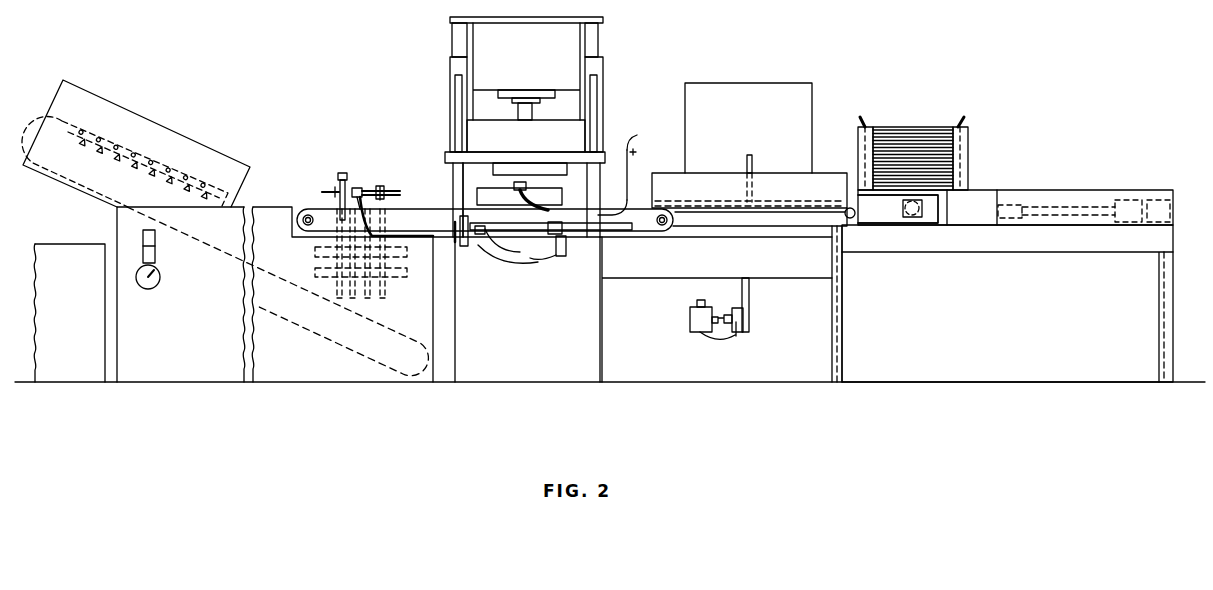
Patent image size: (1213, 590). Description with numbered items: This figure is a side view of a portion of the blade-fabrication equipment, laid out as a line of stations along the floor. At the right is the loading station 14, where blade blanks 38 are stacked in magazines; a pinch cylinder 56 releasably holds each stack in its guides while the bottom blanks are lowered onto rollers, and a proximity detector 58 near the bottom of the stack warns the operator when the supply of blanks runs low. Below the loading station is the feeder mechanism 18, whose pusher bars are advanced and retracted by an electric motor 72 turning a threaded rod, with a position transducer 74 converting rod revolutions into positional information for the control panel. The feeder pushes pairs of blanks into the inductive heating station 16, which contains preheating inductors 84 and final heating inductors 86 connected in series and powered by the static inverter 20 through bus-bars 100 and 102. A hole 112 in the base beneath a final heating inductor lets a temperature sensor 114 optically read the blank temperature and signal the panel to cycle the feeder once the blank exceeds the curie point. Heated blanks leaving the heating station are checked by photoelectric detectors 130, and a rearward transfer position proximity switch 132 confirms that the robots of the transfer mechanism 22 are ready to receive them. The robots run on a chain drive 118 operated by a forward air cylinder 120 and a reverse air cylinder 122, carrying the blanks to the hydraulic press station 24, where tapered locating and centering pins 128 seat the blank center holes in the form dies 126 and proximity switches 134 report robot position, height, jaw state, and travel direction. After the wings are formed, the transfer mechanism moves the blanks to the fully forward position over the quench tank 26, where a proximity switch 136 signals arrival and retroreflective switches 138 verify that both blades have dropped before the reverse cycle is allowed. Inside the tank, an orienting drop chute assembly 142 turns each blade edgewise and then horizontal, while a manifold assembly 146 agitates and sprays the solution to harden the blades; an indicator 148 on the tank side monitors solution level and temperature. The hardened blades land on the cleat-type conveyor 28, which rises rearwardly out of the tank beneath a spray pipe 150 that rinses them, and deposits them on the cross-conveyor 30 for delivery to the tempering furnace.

The loading station 14 is at (967, 94).
The inductive heating station 16 is at (803, 167).
The feeder mechanism 18 is at (1022, 173).
The static inverter 20 is at (762, 69).
The transfer mechanism 22 is at (530, 297).
The hydraulic press station 24 is at (618, 59).
The quench tank 26 is at (287, 189).
The conveyor 28 is at (312, 334).
The cross-conveyor 30 is at (80, 234).
The blade blanks 38 is at (333, 190).
The pinch cylinder 56 is at (914, 218).
The proximity detector 58 is at (890, 196).
The electric motor 72 is at (1132, 200).
The position transducer 74 is at (1152, 200).
The preheating inductors 84 is at (802, 200).
The final heating inductors 86 is at (738, 200).
The bus-bar 100 is at (768, 138).
The bus-bar 102 is at (745, 158).
The hole 112 is at (697, 214).
The temperature sensor 114 is at (690, 319).
The chain drive 118 is at (656, 233).
The forward air cylinder 120 is at (512, 231).
The reverse air cylinder 122 is at (553, 250).
The form dies 126 is at (470, 200).
The locating and centering pins 128 is at (531, 177).
The photoelectric detectors 130 is at (636, 149).
The rearward transfer position proximity switch 132 is at (628, 195).
The proximity switches 134 is at (517, 187).
The proximity switch 136 is at (362, 188).
The retroreflective switches 138 is at (343, 172).
The orienting drop chute assembly 142 is at (313, 272).
The manifold assembly 146 is at (313, 250).
The indicator 148 is at (156, 257).
The spray pipe 150 is at (108, 140).